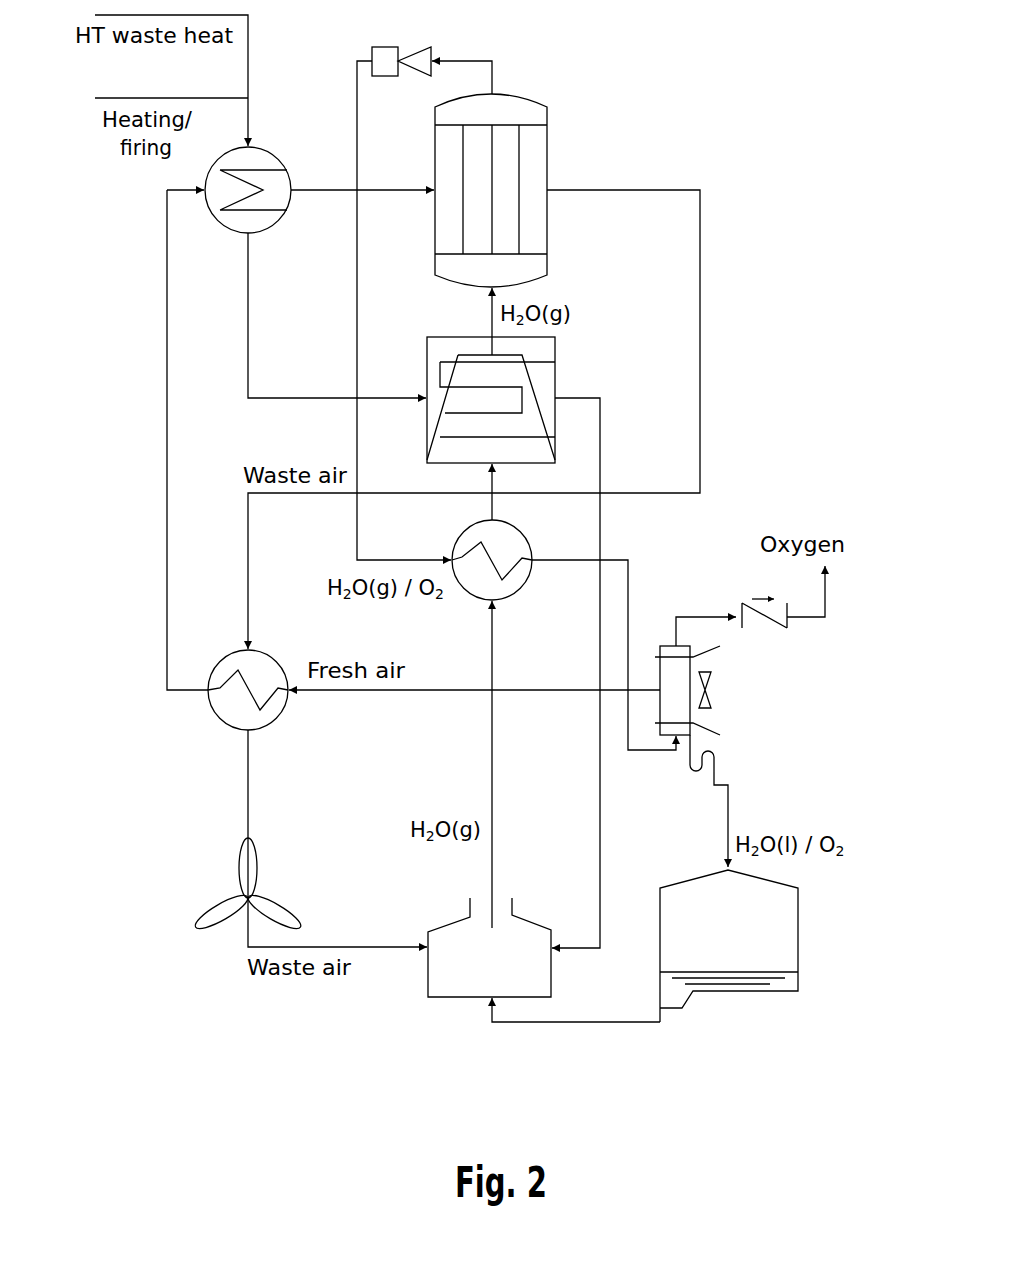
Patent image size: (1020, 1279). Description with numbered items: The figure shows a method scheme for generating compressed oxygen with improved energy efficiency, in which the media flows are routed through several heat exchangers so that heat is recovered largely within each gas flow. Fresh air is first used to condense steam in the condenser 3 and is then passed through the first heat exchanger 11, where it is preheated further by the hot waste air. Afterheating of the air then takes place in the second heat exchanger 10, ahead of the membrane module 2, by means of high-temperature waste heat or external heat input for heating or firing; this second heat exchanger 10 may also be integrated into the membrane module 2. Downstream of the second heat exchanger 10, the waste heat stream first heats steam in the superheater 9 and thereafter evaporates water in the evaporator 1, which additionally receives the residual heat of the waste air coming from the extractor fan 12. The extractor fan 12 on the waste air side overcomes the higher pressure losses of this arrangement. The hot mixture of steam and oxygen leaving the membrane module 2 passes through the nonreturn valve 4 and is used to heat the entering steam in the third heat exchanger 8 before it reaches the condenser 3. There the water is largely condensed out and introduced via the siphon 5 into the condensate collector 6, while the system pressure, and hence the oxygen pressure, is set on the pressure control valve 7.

The evaporator 1 is at (428, 985).
The membrane module 2 is at (548, 142).
The condenser 3 is at (712, 690).
The nonreturn valve 4 is at (432, 49).
The siphon 5 is at (718, 770).
The condensate collector 6 is at (718, 991).
The pressure control valve 7 is at (775, 625).
The third heat exchanger 8 is at (520, 590).
The superheater 9 is at (556, 357).
The second heat exchanger 10 is at (283, 222).
The first heat exchanger 11 is at (287, 708).
The extractor fan 12 is at (262, 880).